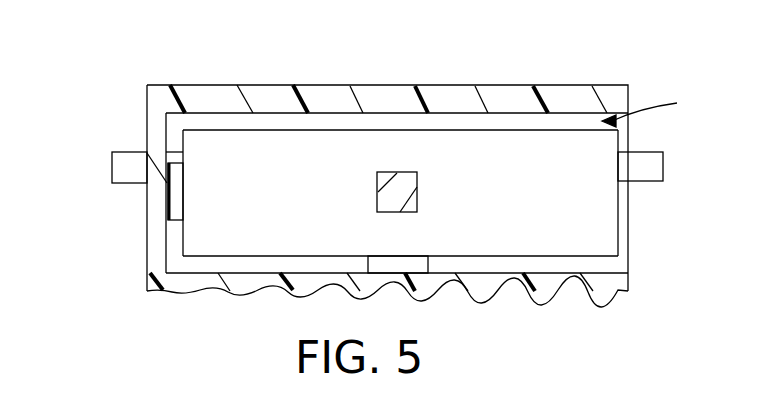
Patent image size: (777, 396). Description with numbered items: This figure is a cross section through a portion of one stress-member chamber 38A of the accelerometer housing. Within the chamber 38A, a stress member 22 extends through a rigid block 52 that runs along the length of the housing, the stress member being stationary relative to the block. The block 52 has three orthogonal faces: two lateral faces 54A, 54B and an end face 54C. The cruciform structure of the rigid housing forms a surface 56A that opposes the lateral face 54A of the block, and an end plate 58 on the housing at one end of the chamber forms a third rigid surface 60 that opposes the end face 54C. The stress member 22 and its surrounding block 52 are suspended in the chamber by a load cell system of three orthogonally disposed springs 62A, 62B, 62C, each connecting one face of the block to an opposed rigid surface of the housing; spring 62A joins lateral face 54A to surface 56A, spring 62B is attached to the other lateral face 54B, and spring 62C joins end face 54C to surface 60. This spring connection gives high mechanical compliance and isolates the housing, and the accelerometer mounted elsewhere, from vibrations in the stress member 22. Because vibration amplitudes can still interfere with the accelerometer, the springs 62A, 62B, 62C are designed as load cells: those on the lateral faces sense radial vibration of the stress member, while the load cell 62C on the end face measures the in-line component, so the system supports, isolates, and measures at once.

The stress member 22 is at (645, 160).
The stress-member chamber 38A is at (660, 109).
The rigid block 52 is at (612, 223).
The lateral face 54A is at (562, 257).
The lateral face 54B is at (222, 240).
The end face 54C is at (183, 240).
The housing surface 56A is at (597, 274).
The end plate 58 is at (155, 138).
The third rigid surface 60 is at (167, 232).
The spring load cell 62A is at (417, 263).
The spring load cell 62B is at (400, 183).
The spring load cell 62C is at (172, 200).